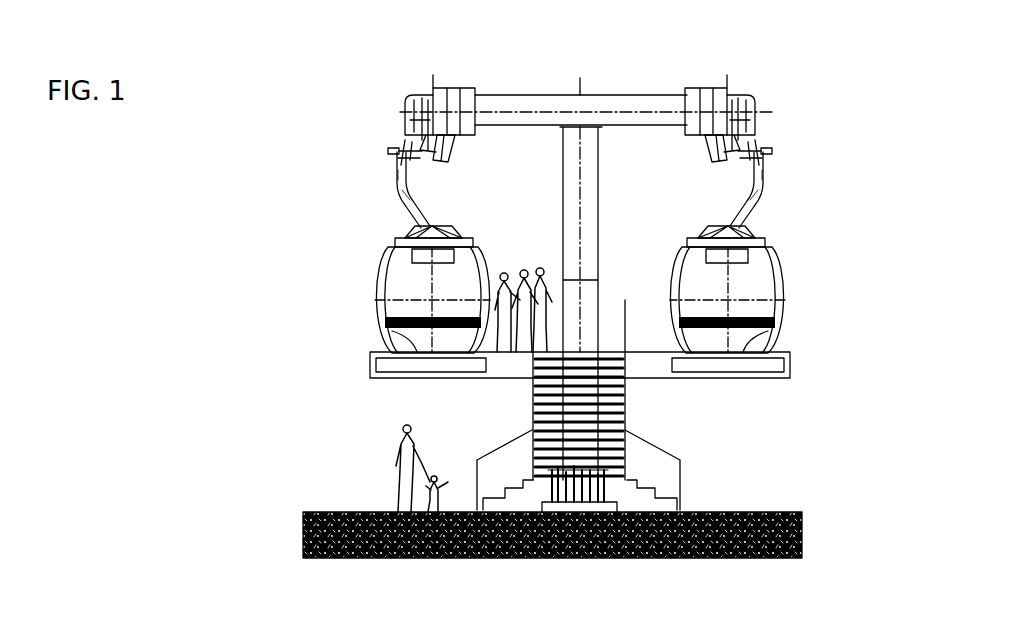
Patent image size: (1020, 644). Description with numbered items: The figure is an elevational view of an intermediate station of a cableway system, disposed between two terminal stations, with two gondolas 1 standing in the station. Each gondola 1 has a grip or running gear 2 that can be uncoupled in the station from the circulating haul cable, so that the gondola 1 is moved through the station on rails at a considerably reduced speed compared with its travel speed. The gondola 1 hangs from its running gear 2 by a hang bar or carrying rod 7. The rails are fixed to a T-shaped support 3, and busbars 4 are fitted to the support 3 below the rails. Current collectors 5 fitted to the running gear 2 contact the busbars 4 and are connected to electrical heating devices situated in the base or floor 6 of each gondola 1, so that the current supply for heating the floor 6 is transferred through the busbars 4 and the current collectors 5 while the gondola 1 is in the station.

The gondola 1 is at (380, 298).
The running gear 2 is at (402, 130).
The T-shaped support 3 is at (588, 107).
The busbar 4 is at (440, 158).
The current collector 5 is at (398, 162).
The floor 6 is at (380, 330).
The carrying rod 7 is at (405, 195).